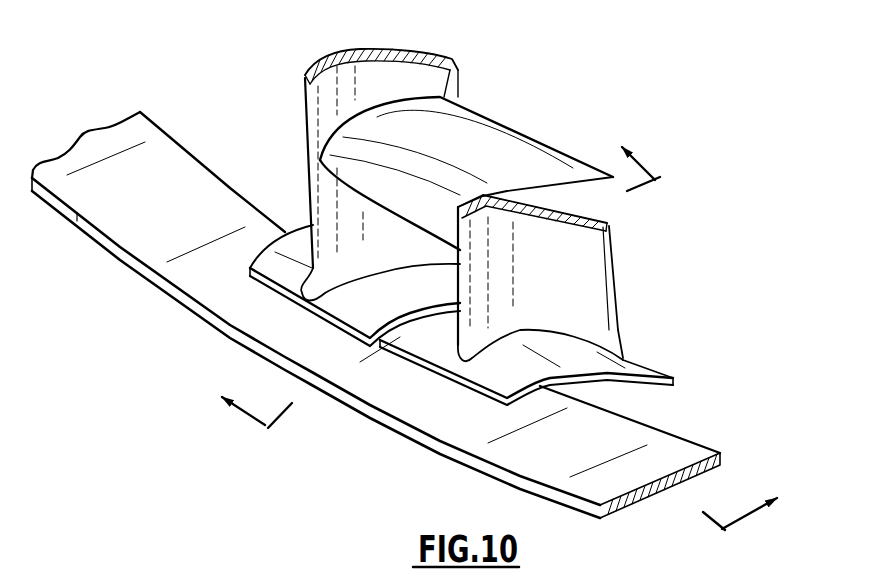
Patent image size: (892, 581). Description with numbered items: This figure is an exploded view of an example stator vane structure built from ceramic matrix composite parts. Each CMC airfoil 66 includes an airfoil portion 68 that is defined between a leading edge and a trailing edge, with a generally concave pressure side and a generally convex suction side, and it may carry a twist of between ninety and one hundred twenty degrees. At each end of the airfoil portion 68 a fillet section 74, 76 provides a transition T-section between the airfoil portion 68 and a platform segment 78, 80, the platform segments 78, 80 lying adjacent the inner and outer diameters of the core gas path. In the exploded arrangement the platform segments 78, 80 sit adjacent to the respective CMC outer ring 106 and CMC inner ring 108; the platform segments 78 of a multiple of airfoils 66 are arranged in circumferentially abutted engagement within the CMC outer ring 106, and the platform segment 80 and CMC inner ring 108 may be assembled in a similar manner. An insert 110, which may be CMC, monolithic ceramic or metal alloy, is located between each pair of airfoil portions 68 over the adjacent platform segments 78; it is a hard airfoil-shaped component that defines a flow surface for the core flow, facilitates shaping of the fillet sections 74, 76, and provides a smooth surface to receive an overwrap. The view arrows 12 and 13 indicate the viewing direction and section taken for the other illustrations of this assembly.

The CMC airfoil 66 is at (511, 187).
The airfoil portion 68 is at (393, 82).
The insert 110 is at (490, 160).
The platform segment 78 is at (497, 319).
The platform segment 80 is at (632, 368).
The fillet section 74 is at (403, 379).
The fillet section 76 is at (310, 298).
The CMC outer ring 106 is at (411, 315).
The CMC inner ring 108 is at (660, 457).
The view direction 12 is at (754, 507).
The section line 13 is at (458, 300).